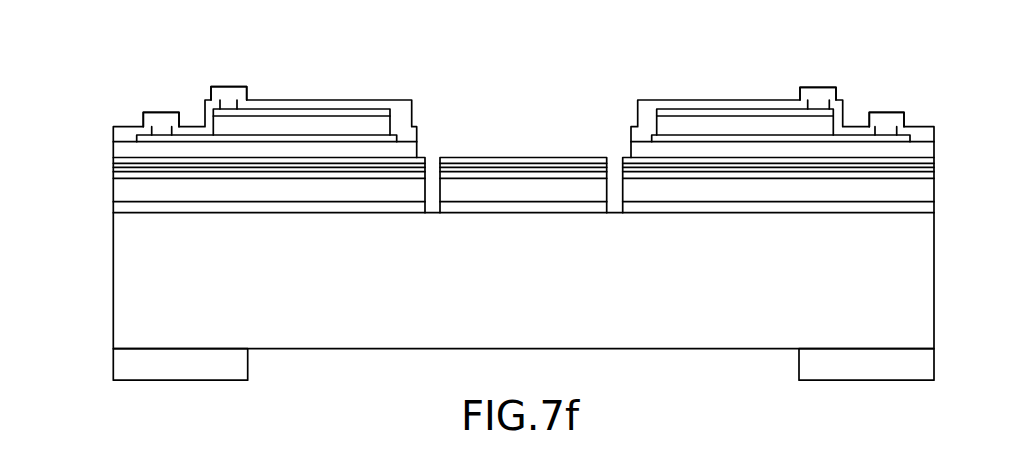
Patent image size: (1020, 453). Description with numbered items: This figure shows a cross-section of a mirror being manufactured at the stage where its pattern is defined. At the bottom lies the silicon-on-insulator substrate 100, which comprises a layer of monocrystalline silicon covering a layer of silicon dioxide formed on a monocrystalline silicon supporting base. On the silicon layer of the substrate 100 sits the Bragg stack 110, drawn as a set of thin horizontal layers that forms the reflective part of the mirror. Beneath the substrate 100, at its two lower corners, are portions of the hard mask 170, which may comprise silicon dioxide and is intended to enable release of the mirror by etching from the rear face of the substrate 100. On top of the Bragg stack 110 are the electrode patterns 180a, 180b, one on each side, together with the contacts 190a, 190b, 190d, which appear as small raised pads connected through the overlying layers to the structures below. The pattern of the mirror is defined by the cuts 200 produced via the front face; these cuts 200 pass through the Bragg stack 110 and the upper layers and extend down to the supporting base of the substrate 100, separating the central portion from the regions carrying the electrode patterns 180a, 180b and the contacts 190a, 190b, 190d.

The silicon-on-insulator substrate 100 is at (110, 348).
The Bragg stack 110 is at (107, 180).
The hard mask 170 is at (237, 360).
The electrode pattern 180a is at (350, 123).
The electrode pattern 180b is at (698, 123).
The contact 190a is at (162, 120).
The contact 190b is at (228, 92).
The contact 190d is at (888, 120).
The cuts 200 is at (613, 167).